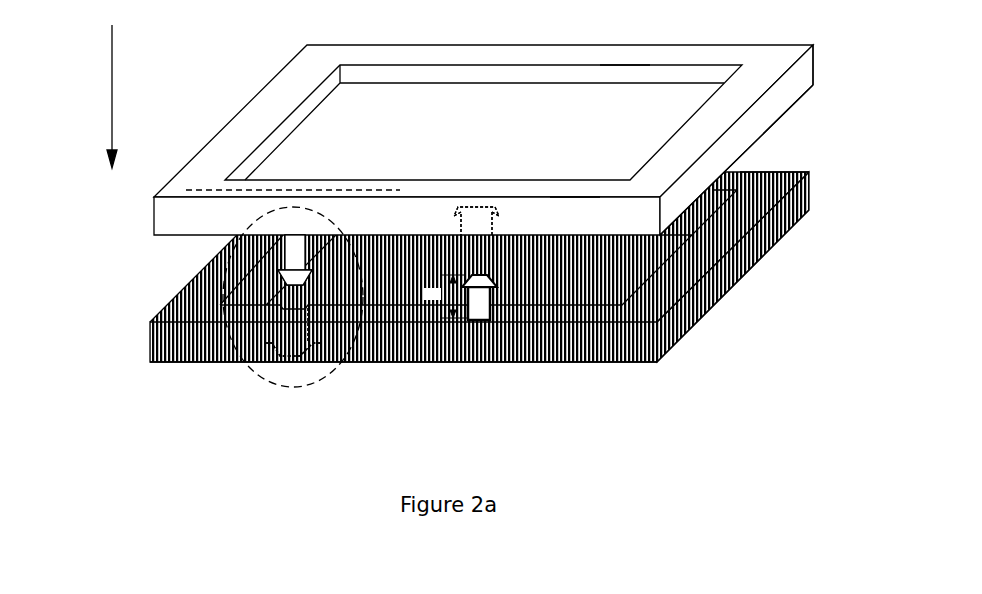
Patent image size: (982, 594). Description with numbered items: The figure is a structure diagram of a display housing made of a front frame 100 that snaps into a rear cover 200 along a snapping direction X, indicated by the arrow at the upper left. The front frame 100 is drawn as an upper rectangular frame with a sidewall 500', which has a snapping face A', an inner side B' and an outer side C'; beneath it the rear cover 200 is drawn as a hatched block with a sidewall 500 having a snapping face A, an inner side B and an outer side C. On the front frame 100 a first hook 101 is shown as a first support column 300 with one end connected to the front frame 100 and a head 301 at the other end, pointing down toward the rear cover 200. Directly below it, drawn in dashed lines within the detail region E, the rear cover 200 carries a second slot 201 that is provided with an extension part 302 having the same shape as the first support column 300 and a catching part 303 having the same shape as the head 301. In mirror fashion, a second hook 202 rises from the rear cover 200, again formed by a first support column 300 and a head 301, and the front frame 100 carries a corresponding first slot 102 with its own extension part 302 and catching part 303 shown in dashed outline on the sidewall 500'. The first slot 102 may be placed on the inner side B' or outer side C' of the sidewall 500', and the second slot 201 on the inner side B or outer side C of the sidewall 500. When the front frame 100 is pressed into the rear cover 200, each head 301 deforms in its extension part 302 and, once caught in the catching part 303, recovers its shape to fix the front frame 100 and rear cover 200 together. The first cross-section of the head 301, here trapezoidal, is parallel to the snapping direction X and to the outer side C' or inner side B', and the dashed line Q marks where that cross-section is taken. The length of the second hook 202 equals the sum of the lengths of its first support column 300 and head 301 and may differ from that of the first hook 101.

The front frame 100 is at (298, 82).
The first hook 101 is at (115, 260).
The first slot 102 is at (472, 205).
The rear cover 200 is at (167, 345).
The second slot 201 is at (297, 333).
The second hook 202 is at (578, 257).
The first support column 300 is at (300, 243).
The head 301 is at (283, 285).
The extension part 302 is at (490, 228).
The catching part 303 is at (488, 215).
The sidewall of the rear cover 500 is at (733, 286).
The sidewall of the front frame 500' is at (745, 160).
The snapping face of the sidewall of the rear cover A is at (733, 247).
The snapping face of the sidewall of the front frame A' is at (823, 77).
The inner side of the sidewall of the rear cover B is at (761, 207).
The inner side of the sidewall of the front frame B' is at (625, 102).
The outer side of the sidewall of the rear cover C is at (403, 373).
The outer side of the sidewall of the front frame C' is at (575, 173).
The enlarged detail region E is at (332, 372).
The dashed line Q-Q' Q is at (295, 190).
The snapping direction X is at (97, 96).